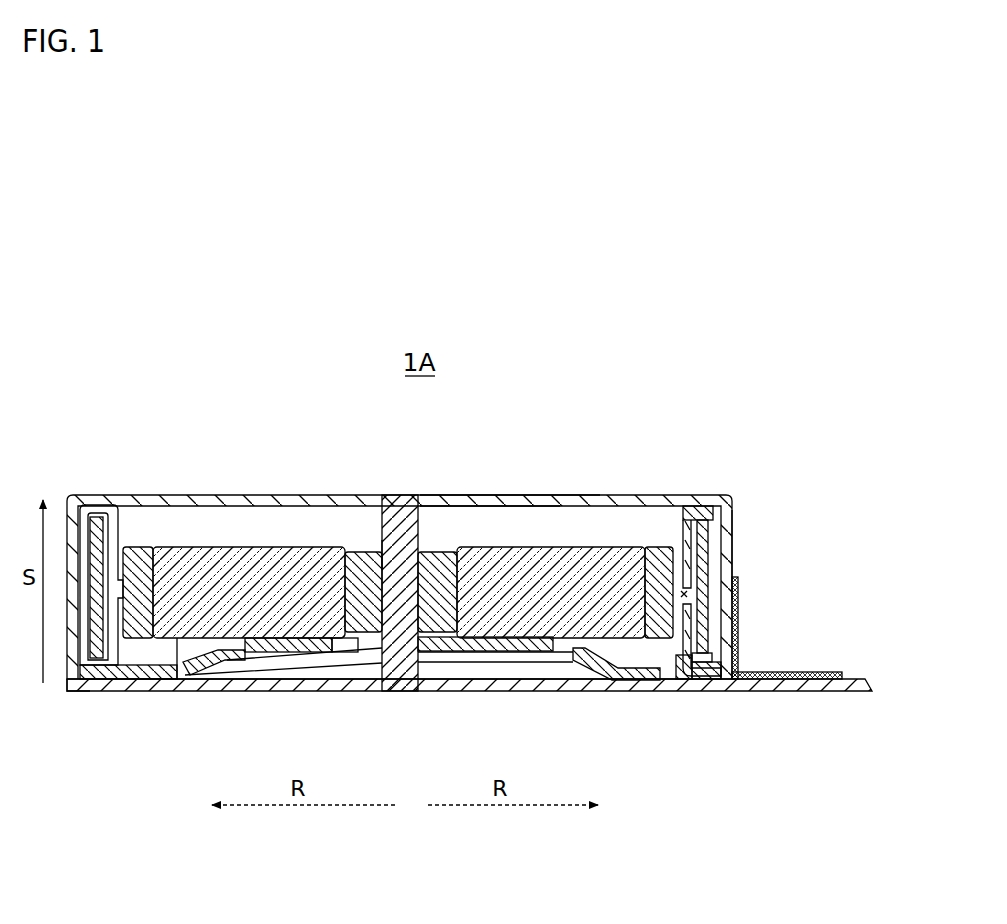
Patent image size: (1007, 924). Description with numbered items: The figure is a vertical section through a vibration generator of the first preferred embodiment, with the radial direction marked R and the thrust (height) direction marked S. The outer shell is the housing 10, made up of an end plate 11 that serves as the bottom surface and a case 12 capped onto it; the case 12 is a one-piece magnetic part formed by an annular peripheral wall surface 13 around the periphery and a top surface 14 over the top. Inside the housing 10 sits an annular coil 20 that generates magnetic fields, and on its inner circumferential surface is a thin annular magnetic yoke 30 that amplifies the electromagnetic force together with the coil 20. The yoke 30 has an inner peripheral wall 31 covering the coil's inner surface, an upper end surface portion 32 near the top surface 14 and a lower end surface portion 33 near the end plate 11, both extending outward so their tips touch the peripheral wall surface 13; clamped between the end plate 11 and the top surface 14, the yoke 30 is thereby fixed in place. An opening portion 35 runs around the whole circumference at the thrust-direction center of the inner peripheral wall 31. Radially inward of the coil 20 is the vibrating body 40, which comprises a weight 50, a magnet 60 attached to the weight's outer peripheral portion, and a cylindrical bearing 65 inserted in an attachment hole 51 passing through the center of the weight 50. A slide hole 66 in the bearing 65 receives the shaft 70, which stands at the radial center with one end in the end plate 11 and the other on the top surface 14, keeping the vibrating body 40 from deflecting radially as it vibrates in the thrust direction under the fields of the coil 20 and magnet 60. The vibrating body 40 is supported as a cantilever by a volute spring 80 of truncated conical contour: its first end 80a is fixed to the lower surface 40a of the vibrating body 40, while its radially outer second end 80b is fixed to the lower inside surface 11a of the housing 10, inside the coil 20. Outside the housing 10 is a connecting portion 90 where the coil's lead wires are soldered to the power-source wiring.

The housing 10 is at (594, 493).
The end plate 11 is at (126, 691).
The lower inside surface 11a is at (75, 689).
The case 12 is at (534, 493).
The peripheral wall surface 13 is at (732, 531).
The top surface 14 is at (458, 497).
The coil 20 is at (710, 555).
The yoke 30 is at (676, 525).
The inner peripheral wall 31 is at (678, 662).
The upper end surface portion 32 is at (705, 506).
The lower end surface portion 33 is at (702, 668).
The opening portion 35 is at (691, 594).
The vibrating body 40 is at (223, 541).
The lower surface 40a is at (177, 642).
The weight 50 is at (278, 546).
The attachment hole 51 is at (457, 552).
The magnet 60 is at (138, 545).
The bearing 65 is at (368, 551).
The slide hole 66 is at (400, 555).
The shaft 70 is at (397, 500).
The spring 80 is at (553, 656).
The first end 80a is at (496, 652).
The second end 80b is at (628, 668).
The connecting portion 90 is at (780, 674).